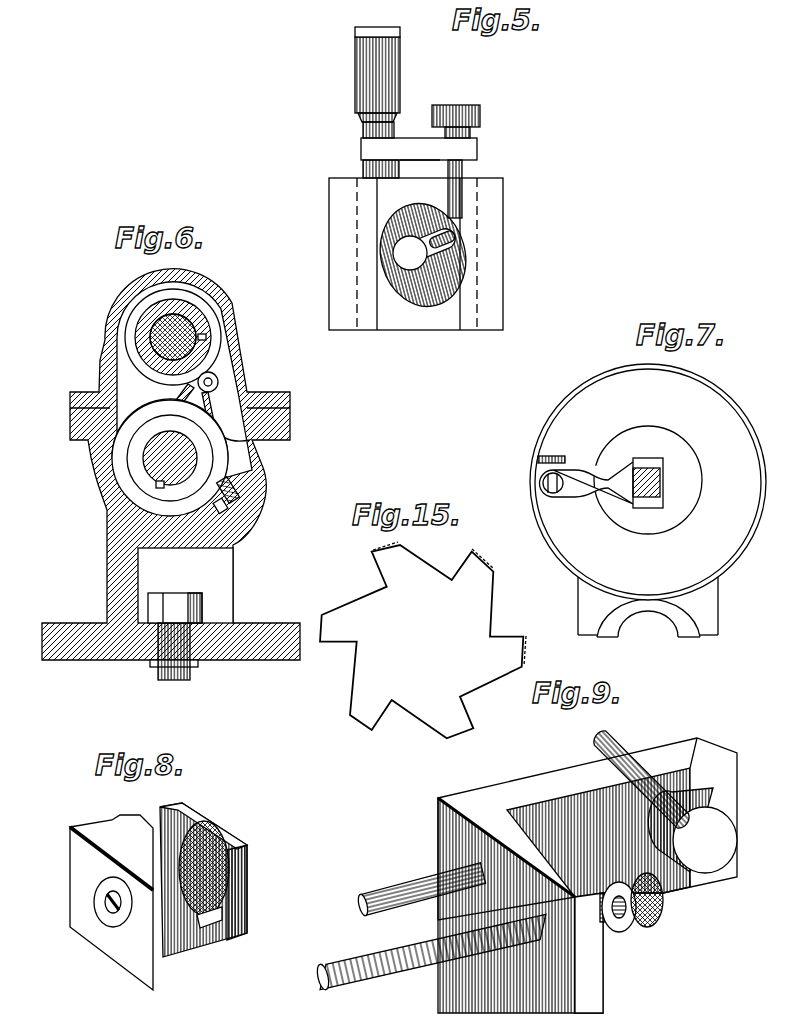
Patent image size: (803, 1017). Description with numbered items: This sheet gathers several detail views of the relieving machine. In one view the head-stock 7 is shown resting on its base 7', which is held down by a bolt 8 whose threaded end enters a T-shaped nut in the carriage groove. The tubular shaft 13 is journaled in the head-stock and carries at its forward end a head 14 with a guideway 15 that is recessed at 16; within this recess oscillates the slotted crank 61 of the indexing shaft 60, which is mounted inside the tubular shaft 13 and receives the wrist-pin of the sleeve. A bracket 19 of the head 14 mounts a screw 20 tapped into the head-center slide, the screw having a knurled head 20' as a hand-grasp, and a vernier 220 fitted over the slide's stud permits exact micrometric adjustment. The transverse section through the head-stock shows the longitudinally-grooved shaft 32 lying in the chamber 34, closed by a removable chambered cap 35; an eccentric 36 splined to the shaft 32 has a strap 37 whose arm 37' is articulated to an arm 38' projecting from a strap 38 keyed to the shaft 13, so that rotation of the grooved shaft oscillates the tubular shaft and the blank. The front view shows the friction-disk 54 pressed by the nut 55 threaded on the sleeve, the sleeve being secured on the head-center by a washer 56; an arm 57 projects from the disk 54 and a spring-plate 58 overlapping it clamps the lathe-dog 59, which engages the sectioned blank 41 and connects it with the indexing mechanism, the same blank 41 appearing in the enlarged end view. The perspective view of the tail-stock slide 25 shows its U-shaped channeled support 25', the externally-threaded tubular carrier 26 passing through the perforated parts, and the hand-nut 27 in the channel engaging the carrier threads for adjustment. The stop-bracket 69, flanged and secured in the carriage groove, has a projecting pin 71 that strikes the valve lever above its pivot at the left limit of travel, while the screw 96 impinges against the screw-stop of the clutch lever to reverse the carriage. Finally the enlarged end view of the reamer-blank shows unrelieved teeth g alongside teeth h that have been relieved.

In FIG. 5, the vernier 220 is at (356, 72).
In FIG. 5, the knurled head 20' is at (465, 101).
In FIG. 5, the screw 20 is at (480, 170).
In FIG. 5, the bracket 19 is at (477, 156).
In FIG. 5, the head 14 is at (335, 212).
In FIG. 5, the guideway 15 is at (377, 200).
In FIG. 5, the shaft 60 is at (445, 228).
In FIG. 5, the crank 61 is at (460, 248).
In FIG. 5, the recess 16 is at (428, 298).
In FIG. 6, the tubular shaft 13 is at (180, 318).
In FIG. 6, the strap 38 is at (194, 333).
In FIG. 6, the chambered cap 35 is at (242, 335).
In FIG. 6, the arm 38' is at (249, 369).
In FIG. 6, the strap 37 is at (182, 412).
In FIG. 6, the arm 37' is at (288, 435).
In FIG. 6, the longitudinally-grooved shaft 32 is at (194, 458).
In FIG. 6, the chamber 34 is at (247, 468).
In FIG. 6, the eccentric 36 is at (187, 492).
In FIG. 6, the head-stock 7 is at (171, 468).
In FIG. 7, the head-stock 7 is at (662, 606).
In FIG. 6, the base 7' is at (265, 608).
In FIG. 6, the bolt 8 is at (191, 675).
In FIG. 7, the friction-disk 54 is at (648, 482).
In FIG. 7, the nut 55 is at (673, 452).
In FIG. 7, the spring-plate 58 is at (566, 447).
In FIG. 7, the square shank 41 is at (660, 474).
In FIG. 15, the square shank 41 is at (423, 640).
In FIG. 7, the arm 57 is at (550, 482).
In FIG. 7, the washer 56 is at (670, 486).
In FIG. 7, the lathe-dog 59 is at (589, 487).
In FIG. 15, the relieved teeth h is at (448, 614).
In FIG. 15, the unrelieved teeth g is at (330, 627).
In FIG. 8, the tubular carrier 26 is at (97, 890).
In FIG. 8, the slide 25 is at (111, 902).
In FIG. 8, the hand-nut 27 is at (218, 840).
In FIG. 8, the channeled support 25' is at (227, 880).
In FIG. 9, the stop-bracket 69 is at (587, 875).
In FIG. 9, the pin 71 is at (390, 900).
In FIG. 9, the screw 96 is at (413, 972).